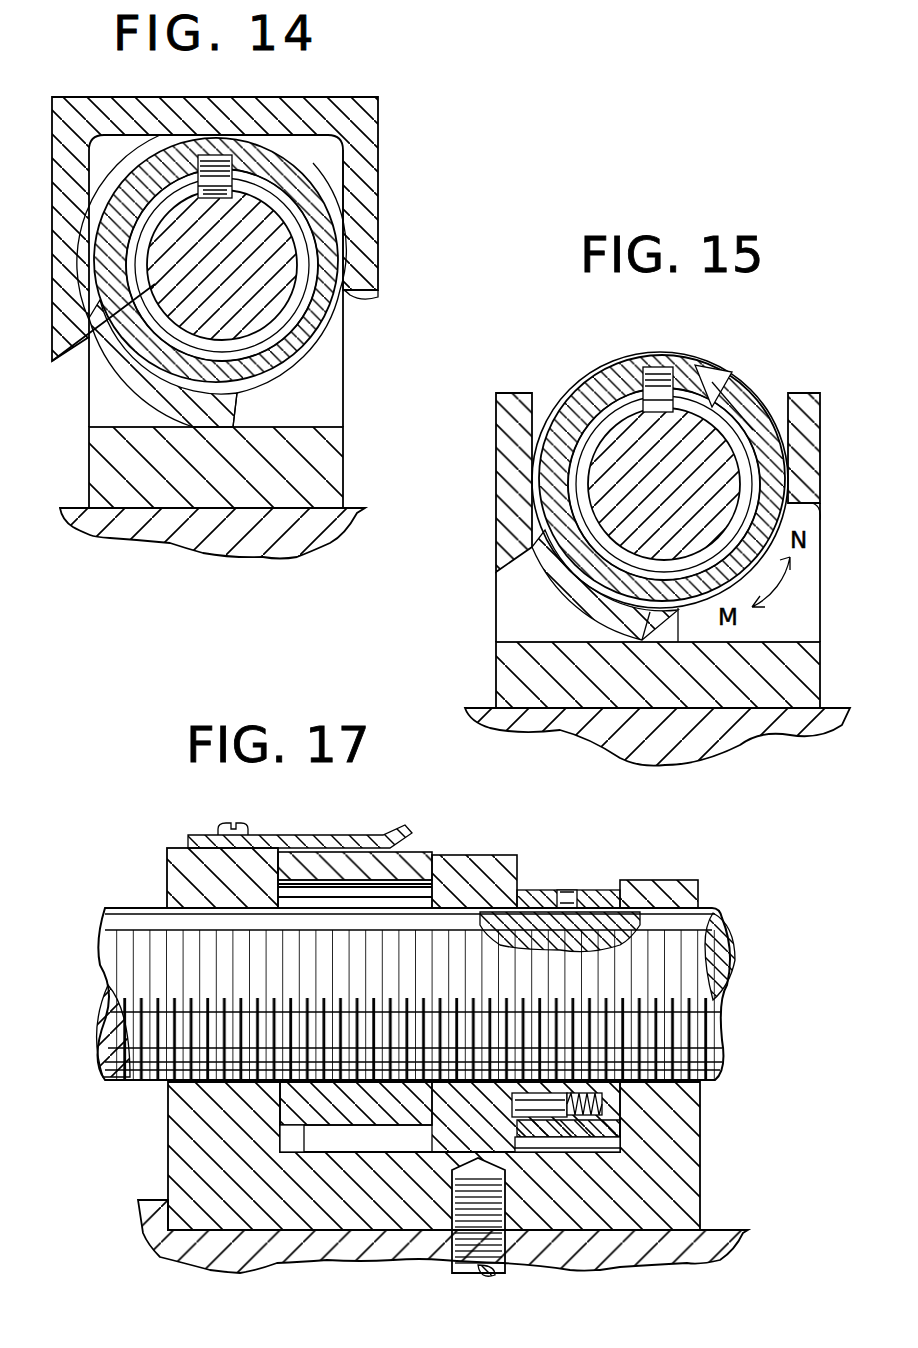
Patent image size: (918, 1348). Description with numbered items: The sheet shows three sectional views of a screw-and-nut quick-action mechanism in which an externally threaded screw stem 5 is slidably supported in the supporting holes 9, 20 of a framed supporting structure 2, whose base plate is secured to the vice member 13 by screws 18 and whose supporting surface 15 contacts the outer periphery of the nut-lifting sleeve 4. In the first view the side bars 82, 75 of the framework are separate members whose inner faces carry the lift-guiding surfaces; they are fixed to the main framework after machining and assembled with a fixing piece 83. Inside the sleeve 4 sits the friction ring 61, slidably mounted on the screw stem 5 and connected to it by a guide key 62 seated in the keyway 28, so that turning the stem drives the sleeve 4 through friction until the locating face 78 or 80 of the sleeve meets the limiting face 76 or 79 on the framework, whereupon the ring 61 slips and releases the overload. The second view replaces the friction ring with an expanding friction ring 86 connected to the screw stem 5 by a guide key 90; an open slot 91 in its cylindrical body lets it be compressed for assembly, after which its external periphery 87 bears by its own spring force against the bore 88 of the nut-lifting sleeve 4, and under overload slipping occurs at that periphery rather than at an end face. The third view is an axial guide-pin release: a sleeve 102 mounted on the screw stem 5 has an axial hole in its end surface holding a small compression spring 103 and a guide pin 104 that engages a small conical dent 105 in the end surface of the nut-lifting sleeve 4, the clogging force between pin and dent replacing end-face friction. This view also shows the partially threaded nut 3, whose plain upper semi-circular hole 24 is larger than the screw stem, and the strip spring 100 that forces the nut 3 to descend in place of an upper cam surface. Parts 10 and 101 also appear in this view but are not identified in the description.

In FIG. 14, the supporting structure 2 is at (328, 472).
In FIG. 15, the supporting structure 2 is at (658, 675).
In FIG. 17, the supporting structure 2 is at (167, 860).
In FIG. 17, the partially threaded nut 3 is at (415, 855).
In FIG. 14, the nut-lifting sleeve 4 is at (340, 330).
In FIG. 15, the nut-lifting sleeve 4 is at (605, 375).
In FIG. 17, the nut-lifting sleeve 4 is at (500, 855).
In FIG. 14, the screw stem 5 is at (240, 312).
In FIG. 15, the screw stem 5 is at (658, 512).
In FIG. 17, the screw stem 5 is at (722, 1048).
In FIG. 17, the supporting hole 9 is at (205, 925).
In FIG. 17, the shaft groove 10 is at (445, 920).
In FIG. 14, the fixed or movable member of the vice 13 is at (148, 520).
In FIG. 15, the fixed or movable member of the vice 13 is at (740, 735).
In FIG. 17, the fixed or movable member of the vice 13 is at (140, 1225).
In FIG. 17, the supporting surface 15 is at (330, 1137).
In FIG. 17, the screws 18 is at (508, 1208).
In FIG. 17, the supporting hole 20 is at (700, 940).
In FIG. 17, the upper semi-circular hole 24 is at (325, 895).
In FIG. 14, the keyway 28 is at (215, 198).
In FIG. 17, the keyway 28 is at (632, 928).
In FIG. 14, the friction ring (cone) 61 is at (155, 347).
In FIG. 14, the guide key 62 is at (213, 160).
In FIG. 14, the side bar 75 is at (366, 200).
In FIG. 15, the side bar 75 is at (805, 393).
In FIG. 14, the limiting face 76 is at (374, 297).
In FIG. 15, the limiting face 76 is at (820, 535).
In FIG. 14, the locating face 78 is at (240, 410).
In FIG. 15, the locating face 78 is at (690, 625).
In FIG. 14, the limiting face 79 is at (65, 365).
In FIG. 15, the limiting face 79 is at (510, 570).
In FIG. 14, the locating face 80 is at (121, 248).
In FIG. 15, the locating face 80 is at (512, 545).
In FIG. 14, the side bar 82 is at (52, 150).
In FIG. 15, the side bar 82 is at (512, 393).
In FIG. 14, the fixing piece 83 is at (327, 107).
In FIG. 15, the expanding friction ring 86 is at (735, 400).
In FIG. 15, the external periphery 87 is at (572, 600).
In FIG. 15, the bore 88 is at (649, 644).
In FIG. 15, the guide key 90 is at (660, 367).
In FIG. 15, the open slot 91 is at (712, 385).
In FIG. 17, the strip spring 100 is at (330, 835).
In FIG. 17, the screw 101 is at (566, 890).
In FIG. 17, the sleeve (slip sleeve) 102 is at (617, 888).
In FIG. 17, the small compression spring 103 is at (602, 1152).
In FIG. 17, the guide pin (or steel ball) 104 is at (520, 1093).
In FIG. 17, the small conical dent 105 is at (512, 1118).